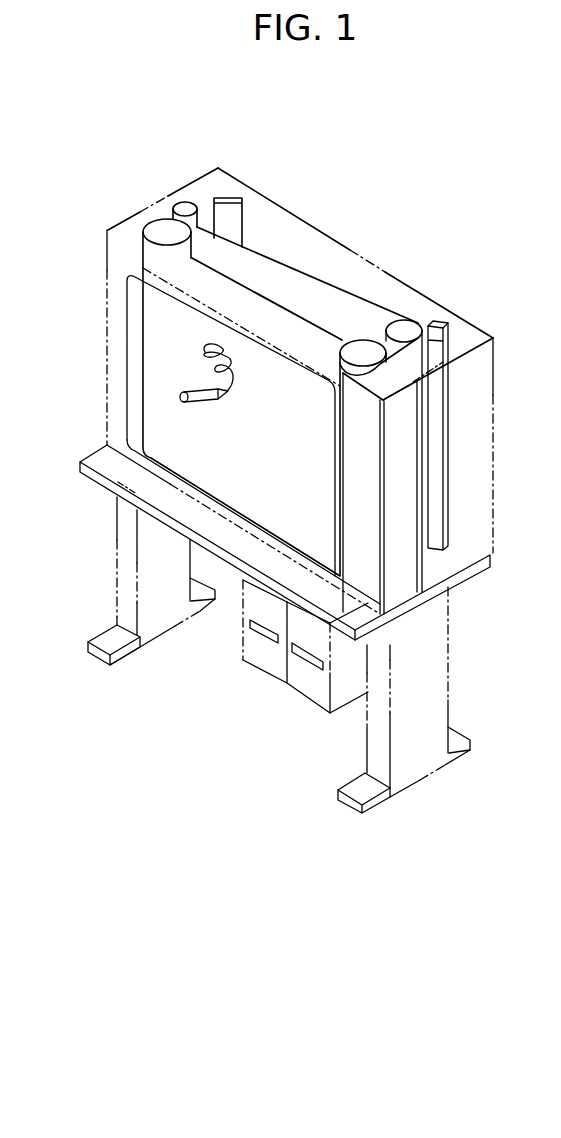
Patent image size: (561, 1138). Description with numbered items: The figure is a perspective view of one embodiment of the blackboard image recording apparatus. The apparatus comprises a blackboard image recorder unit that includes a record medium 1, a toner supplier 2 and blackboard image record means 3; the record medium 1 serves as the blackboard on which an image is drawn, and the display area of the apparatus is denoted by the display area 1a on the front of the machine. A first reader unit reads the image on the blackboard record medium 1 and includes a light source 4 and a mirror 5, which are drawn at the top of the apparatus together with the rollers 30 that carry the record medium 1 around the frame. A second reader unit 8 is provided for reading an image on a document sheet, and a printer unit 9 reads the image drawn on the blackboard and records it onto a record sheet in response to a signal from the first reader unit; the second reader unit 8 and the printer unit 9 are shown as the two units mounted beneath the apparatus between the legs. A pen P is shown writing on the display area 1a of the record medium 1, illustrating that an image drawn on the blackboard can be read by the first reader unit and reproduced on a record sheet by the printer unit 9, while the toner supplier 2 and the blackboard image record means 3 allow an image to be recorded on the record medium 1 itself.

The record medium 1 is at (357, 292).
The display area 1a is at (125, 378).
The toner supplier 2 is at (445, 326).
The blackboard image record means 3 is at (352, 470).
The light source 4 is at (185, 206).
The mirror 5 is at (228, 195).
The second reader unit 8 is at (300, 687).
The printer unit 9 is at (255, 660).
The rollers 30 is at (155, 228).
The pen P is at (194, 390).